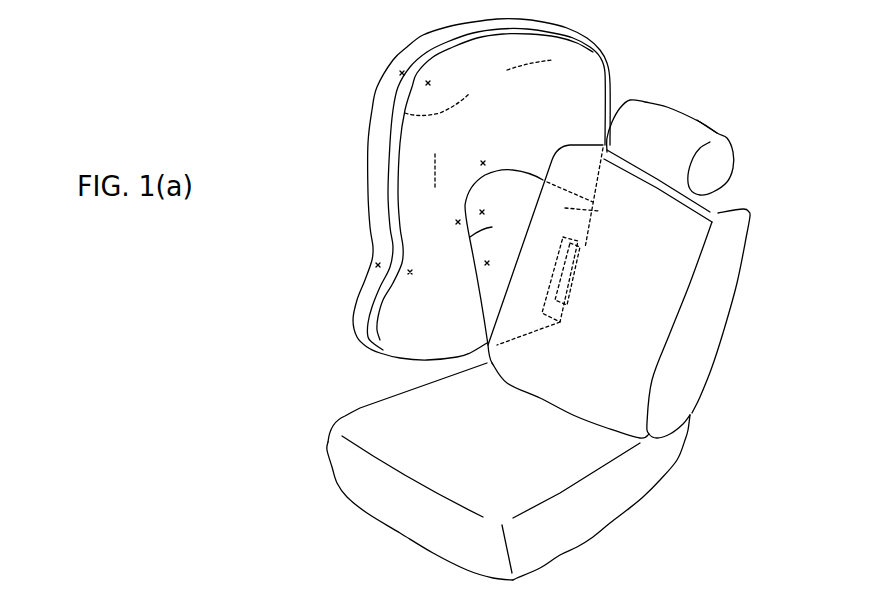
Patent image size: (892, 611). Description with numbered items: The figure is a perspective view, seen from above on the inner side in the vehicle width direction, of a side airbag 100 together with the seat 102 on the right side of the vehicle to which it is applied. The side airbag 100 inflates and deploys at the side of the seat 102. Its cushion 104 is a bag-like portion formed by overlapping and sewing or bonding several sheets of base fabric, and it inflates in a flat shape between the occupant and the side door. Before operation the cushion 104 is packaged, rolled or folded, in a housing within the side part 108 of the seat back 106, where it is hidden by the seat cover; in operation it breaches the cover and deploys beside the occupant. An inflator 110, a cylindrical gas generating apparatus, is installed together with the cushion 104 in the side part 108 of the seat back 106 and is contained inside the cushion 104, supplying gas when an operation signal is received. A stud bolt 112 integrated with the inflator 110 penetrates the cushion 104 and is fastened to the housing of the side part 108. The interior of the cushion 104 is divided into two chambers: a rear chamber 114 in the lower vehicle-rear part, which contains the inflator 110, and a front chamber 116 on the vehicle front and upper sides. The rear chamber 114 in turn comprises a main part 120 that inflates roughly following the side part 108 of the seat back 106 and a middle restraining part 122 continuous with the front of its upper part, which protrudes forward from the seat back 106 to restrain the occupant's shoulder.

The side airbag 100 is at (340, 88).
The seat 102 is at (697, 119).
The cushion 104 is at (599, 43).
The seat back 106 is at (738, 200).
The side part 108 is at (550, 150).
The inflator 110 is at (580, 250).
The stud bolt 112 is at (580, 262).
The rear chamber 114 is at (513, 170).
The front chamber 116 is at (372, 112).
The main part 120 is at (600, 211).
The middle restraining part 122 is at (470, 237).